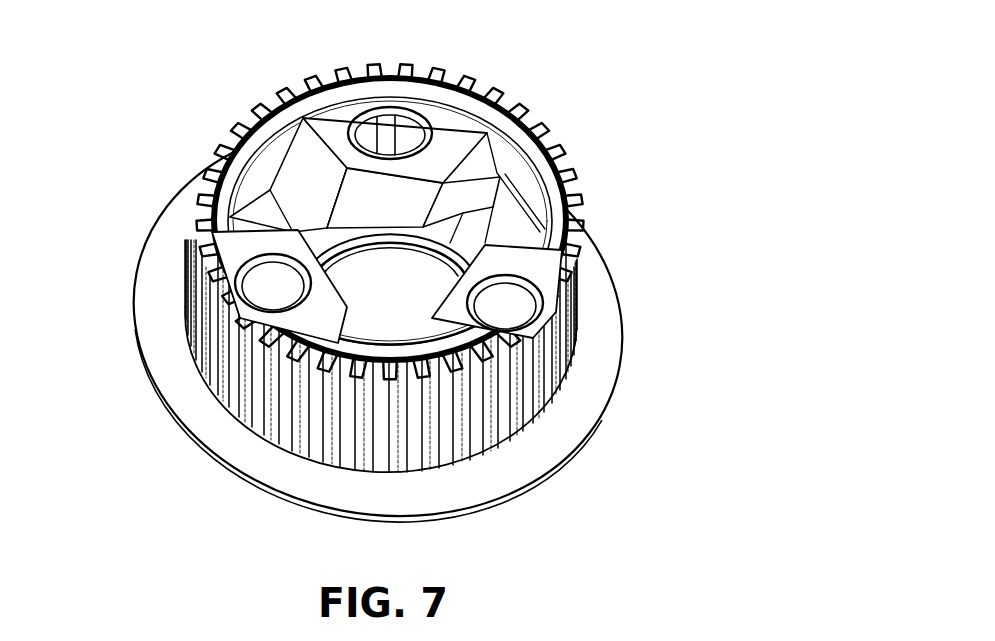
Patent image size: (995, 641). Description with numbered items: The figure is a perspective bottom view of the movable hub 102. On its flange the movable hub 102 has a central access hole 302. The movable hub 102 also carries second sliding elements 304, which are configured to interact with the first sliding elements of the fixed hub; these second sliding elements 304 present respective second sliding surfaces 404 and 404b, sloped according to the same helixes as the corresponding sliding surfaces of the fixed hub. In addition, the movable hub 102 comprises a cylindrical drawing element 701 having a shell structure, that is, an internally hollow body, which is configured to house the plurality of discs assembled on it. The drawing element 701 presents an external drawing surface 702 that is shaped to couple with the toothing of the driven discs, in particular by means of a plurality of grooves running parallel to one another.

The movable hub 102 is at (683, 121).
The central access hole 302 is at (382, 302).
The second sliding elements 304 is at (447, 137).
The second sliding surface 404 is at (447, 185).
The second sliding surface 404b is at (307, 178).
The cylindrical drawing element 701 is at (544, 424).
The external drawing surface 702 is at (546, 356).